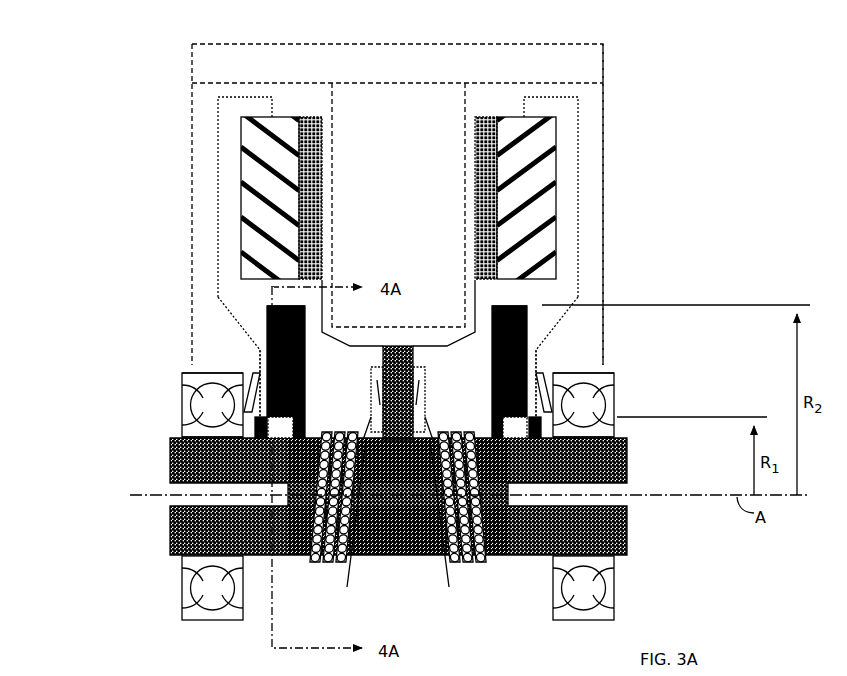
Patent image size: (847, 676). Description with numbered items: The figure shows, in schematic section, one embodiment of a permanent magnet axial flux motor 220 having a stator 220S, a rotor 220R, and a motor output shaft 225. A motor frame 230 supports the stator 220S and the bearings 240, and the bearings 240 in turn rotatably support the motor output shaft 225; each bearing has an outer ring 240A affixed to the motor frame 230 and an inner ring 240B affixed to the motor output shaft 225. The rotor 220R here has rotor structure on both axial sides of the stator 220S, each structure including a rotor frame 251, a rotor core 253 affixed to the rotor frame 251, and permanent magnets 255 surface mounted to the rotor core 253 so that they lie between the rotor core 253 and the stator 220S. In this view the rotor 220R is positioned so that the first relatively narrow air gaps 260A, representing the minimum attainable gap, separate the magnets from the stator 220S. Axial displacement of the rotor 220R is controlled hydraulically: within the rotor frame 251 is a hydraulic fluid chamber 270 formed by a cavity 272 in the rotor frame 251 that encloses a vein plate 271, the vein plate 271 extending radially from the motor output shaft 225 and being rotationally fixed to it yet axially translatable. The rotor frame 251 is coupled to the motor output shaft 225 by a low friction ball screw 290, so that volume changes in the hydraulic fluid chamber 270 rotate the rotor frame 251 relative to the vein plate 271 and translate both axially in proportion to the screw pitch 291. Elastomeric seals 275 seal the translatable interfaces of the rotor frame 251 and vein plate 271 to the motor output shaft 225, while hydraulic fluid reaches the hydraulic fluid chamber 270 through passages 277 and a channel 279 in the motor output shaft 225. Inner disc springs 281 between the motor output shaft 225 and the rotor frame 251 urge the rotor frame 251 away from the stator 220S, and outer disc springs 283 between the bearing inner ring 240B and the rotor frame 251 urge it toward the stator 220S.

The PMAF motor 220 is at (146, 164).
The rotor 220R is at (626, 137).
The stator 220S is at (416, 219).
The motor frame 230 is at (411, 78).
The rotor core 253 is at (271, 113).
The permanent magnets 255 is at (288, 115).
The first relatively narrow air gaps 260A is at (325, 127).
The rotor frame 251 is at (354, 373).
The hydraulic fluid chamber 270 is at (268, 330).
The vein plate 271 is at (268, 306).
The cavity 272 is at (260, 360).
The outer disc springs 283 is at (252, 388).
The elastomeric seals 275 is at (282, 440).
The passages 277 is at (275, 445).
The channel 279 is at (175, 502).
The inner disc springs 281 is at (401, 526).
The ball screw 290 is at (332, 572).
The screw pitch 291 is at (458, 426).
The motor output shaft 225 is at (610, 462).
The bearings 240 is at (165, 406).
The outer ring 240A is at (185, 377).
The inner ring 240B is at (185, 425).